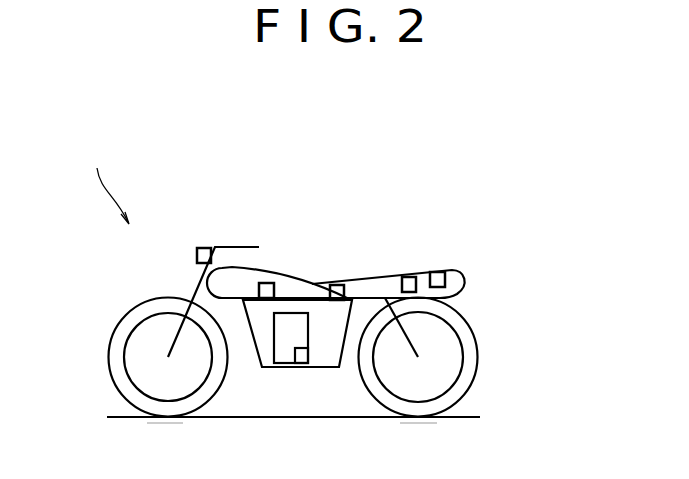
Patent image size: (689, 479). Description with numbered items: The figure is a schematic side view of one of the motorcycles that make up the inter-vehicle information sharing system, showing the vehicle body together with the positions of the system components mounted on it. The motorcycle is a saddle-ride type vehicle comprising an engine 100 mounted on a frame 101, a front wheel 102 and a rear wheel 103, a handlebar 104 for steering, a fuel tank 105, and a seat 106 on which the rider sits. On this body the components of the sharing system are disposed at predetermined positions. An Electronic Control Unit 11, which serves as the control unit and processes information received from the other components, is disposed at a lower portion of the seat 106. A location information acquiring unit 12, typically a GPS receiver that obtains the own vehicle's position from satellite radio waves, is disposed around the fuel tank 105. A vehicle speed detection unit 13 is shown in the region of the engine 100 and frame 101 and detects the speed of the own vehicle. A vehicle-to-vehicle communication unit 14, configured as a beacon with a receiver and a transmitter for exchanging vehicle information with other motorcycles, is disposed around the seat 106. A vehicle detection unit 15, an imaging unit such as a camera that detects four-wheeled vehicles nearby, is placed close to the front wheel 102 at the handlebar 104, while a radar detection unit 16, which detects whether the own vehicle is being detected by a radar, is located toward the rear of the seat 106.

The engine 100 is at (283, 358).
The frame 101 is at (258, 353).
The front wheel 102 is at (107, 350).
The rear wheel 103 is at (478, 357).
The handlebar 104 is at (235, 247).
The fuel tank 105 is at (302, 278).
The seat 106 is at (467, 278).
The Electronic Control Unit (ECU) 11 is at (338, 285).
The location information acquiring unit 12 is at (268, 283).
The vehicle speed detection unit 13 is at (303, 358).
The vehicle-to-vehicle communication unit 14 is at (409, 277).
The vehicle detection unit 15 is at (196, 256).
The radar detection unit 16 is at (438, 271).